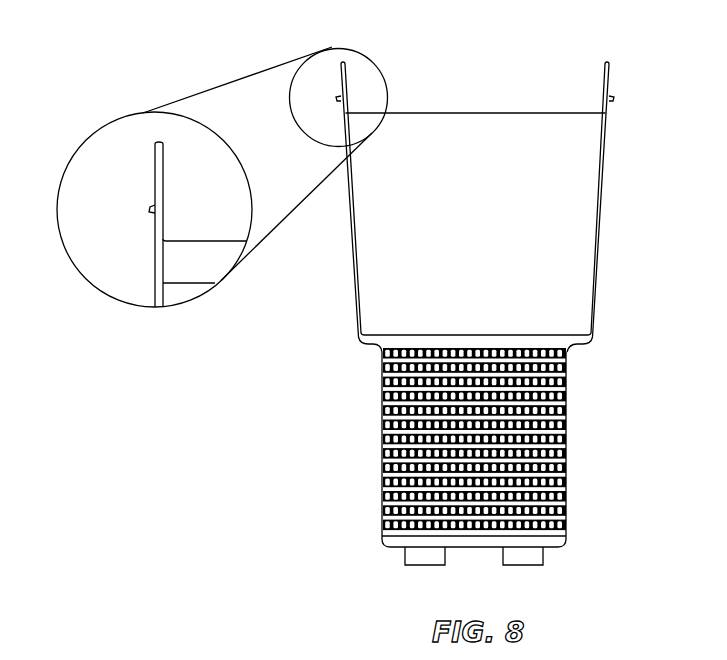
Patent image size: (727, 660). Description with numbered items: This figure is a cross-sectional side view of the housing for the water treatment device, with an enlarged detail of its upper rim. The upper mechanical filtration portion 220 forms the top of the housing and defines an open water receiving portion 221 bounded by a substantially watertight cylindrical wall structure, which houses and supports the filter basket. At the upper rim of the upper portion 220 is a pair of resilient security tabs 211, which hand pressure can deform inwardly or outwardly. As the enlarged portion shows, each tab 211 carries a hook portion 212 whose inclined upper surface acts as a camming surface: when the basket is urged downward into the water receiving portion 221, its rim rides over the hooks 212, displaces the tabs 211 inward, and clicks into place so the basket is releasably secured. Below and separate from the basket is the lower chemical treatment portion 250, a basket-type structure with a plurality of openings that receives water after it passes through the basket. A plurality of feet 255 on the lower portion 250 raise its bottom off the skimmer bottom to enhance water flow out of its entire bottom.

The security tabs 211 is at (157, 137).
The hook portion 212 is at (153, 164).
The upper mechanical filtration portion 220 is at (603, 218).
The open water receiving portion 221 is at (505, 92).
The lower chemical treatment portion 250 is at (567, 457).
The feet 255 is at (527, 564).